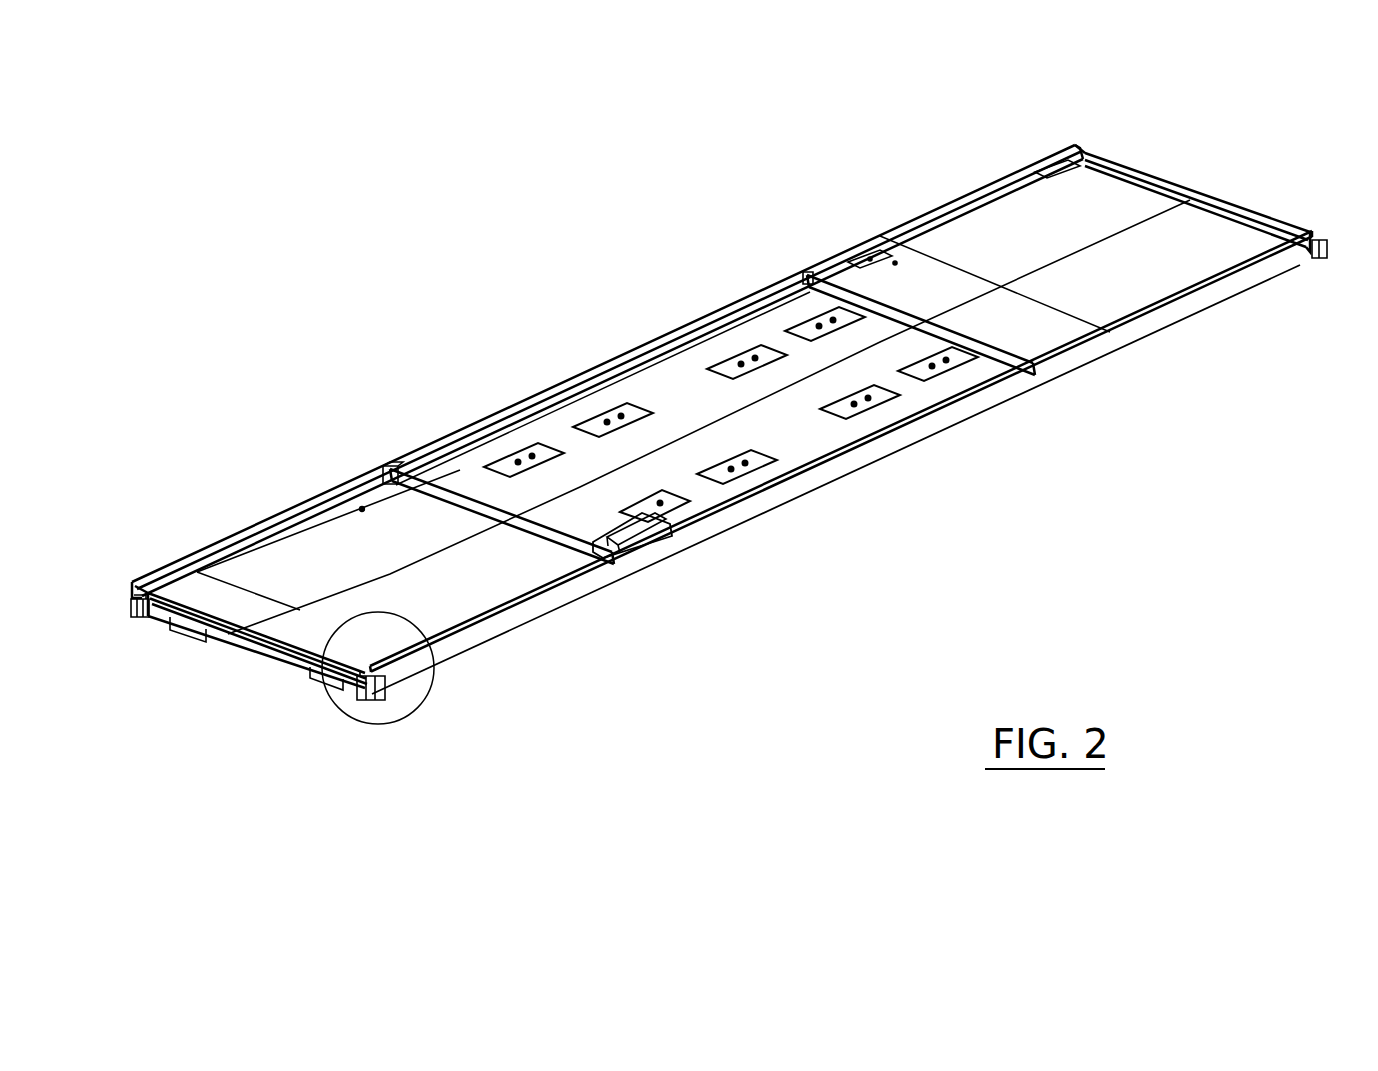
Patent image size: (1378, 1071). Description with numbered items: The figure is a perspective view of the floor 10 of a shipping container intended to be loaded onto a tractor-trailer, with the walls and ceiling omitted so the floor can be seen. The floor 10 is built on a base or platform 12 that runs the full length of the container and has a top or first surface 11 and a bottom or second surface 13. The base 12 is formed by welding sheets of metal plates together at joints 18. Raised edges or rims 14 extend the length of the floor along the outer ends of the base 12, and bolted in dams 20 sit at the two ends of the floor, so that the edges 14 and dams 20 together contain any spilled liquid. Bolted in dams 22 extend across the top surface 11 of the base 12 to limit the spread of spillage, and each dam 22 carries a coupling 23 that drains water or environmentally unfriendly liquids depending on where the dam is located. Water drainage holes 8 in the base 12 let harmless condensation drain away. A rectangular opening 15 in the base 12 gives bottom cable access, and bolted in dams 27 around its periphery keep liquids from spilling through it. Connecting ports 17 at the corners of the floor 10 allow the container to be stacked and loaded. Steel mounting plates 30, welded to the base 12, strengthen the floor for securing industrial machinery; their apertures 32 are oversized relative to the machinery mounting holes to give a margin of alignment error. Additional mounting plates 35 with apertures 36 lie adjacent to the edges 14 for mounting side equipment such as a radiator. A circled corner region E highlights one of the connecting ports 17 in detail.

The water drainage holes 8 is at (379, 516).
The floor 10 is at (446, 201).
The top or first surface 11 is at (294, 545).
The base or platform 12 is at (330, 525).
The bottom or second surface 13 is at (291, 678).
The raised edges or rims 14 is at (993, 185).
The rectangular opening 15 is at (655, 560).
The connecting ports 17 is at (131, 627).
The joints 18 is at (1113, 240).
The bolted in dams 20 is at (1150, 165).
The bolted in dams 22 is at (455, 500).
The coupling 23 is at (437, 470).
The bolted in dams 27 is at (705, 550).
The mounting plates 30 is at (532, 445).
The apertures 32 is at (876, 413).
The additional mounting plates 35 is at (870, 255).
The apertures 36 is at (897, 266).
The detail region E is at (405, 722).